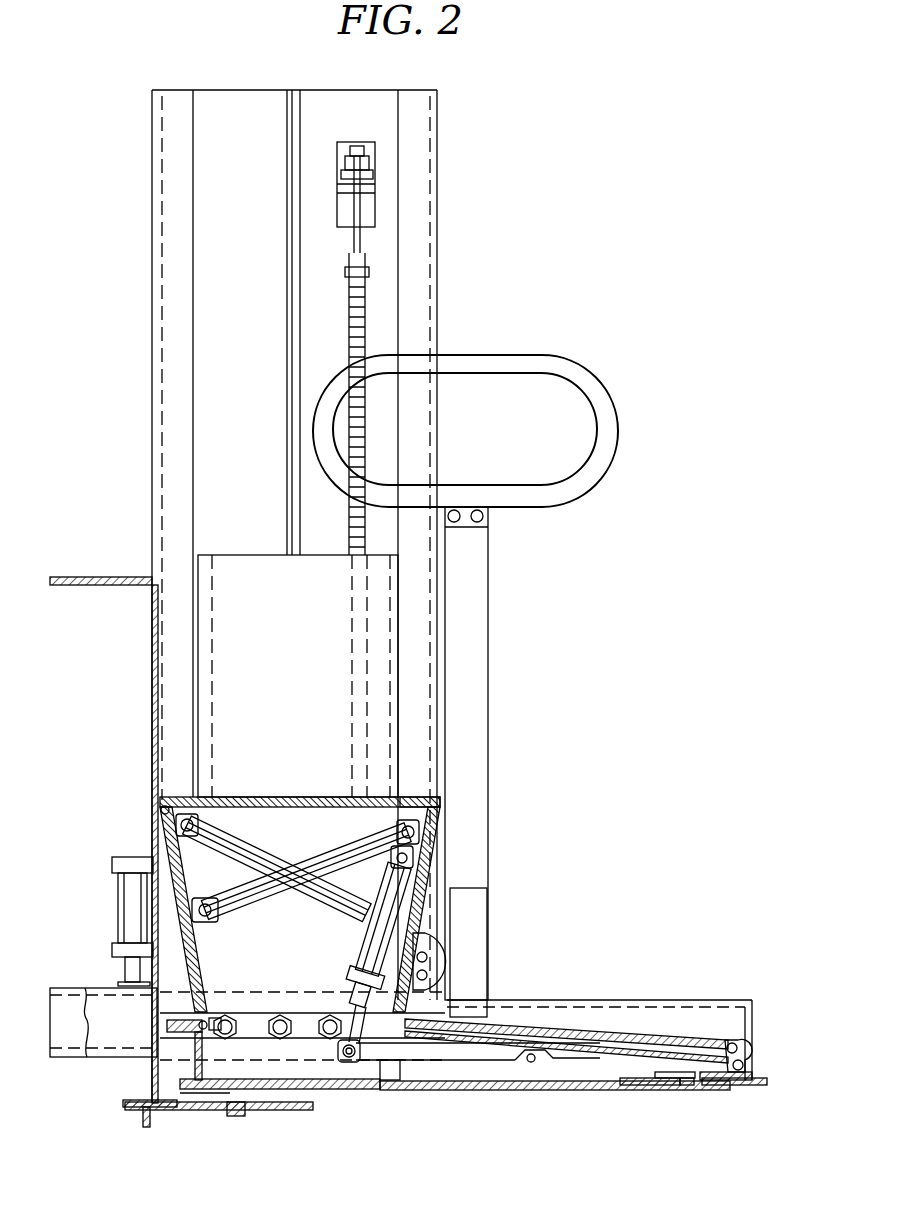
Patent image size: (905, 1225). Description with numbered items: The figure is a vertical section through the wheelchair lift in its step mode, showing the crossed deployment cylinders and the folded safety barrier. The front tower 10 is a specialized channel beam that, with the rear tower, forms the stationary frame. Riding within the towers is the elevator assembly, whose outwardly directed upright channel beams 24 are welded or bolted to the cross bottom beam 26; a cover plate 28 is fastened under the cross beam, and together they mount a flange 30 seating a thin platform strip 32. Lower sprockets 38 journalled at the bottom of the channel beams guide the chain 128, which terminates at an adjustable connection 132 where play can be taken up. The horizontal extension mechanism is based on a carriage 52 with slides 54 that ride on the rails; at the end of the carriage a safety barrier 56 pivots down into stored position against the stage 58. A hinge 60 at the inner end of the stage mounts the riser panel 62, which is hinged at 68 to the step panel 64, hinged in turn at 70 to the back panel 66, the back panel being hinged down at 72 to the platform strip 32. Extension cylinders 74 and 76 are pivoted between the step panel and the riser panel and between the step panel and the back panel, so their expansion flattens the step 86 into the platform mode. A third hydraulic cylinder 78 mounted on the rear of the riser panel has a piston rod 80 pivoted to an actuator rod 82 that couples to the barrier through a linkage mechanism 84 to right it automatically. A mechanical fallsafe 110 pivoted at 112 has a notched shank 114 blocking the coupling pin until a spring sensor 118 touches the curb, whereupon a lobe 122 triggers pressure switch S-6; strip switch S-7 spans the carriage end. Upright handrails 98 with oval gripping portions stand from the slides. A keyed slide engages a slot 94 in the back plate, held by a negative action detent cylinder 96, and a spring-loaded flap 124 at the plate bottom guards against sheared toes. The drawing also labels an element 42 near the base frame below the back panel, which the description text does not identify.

The front tower 10 is at (440, 118).
The adjustable connection 132 is at (375, 163).
The chain 128 is at (366, 296).
The upright handrails 98 is at (510, 360).
The upright channel beams 24 is at (255, 575).
The step panel 64 is at (262, 797).
The step 86 is at (305, 785).
The hinge 68 is at (440, 805).
The hinge 70 is at (160, 808).
The back panel 66 is at (170, 850).
The riser panel 62 is at (432, 845).
The extension cylinder 74 is at (352, 893).
The extension cylinder 76 is at (245, 900).
The third hydraulic cylinder 78 is at (372, 946).
The piston rod 80 is at (346, 1040).
The lower sprockets 38 is at (348, 1060).
The base frame 42 is at (305, 1013).
The hinge 72 is at (215, 1030).
The platform strip 32 is at (200, 1022).
The flange 30 is at (195, 1070).
The cross bottom beam 26 is at (313, 1090).
The spring-loaded flap 124 is at (282, 1112).
The negative action detent cylinder 96 is at (130, 911).
The slot 94 is at (62, 1000).
The carriage 52 is at (623, 1009).
The slides 54 is at (625, 1000).
The stage 58 is at (505, 1020).
The safety barrier 56 is at (540, 1035).
The linkage mechanism 84 is at (740, 1048).
The hinge 60 is at (745, 1065).
The actuator rod 82 is at (448, 1062).
The mechanical fallsafe 110 is at (495, 1062).
The pivot 112 is at (529, 1063).
The notched shank 114 is at (410, 1082).
The cover plate 28 is at (565, 1092).
The spring sensor 118 is at (660, 1088).
The lobe 122 is at (687, 1088).
The pressure switch S-6 is at (680, 1087).
The strip switch S-7 is at (730, 1087).